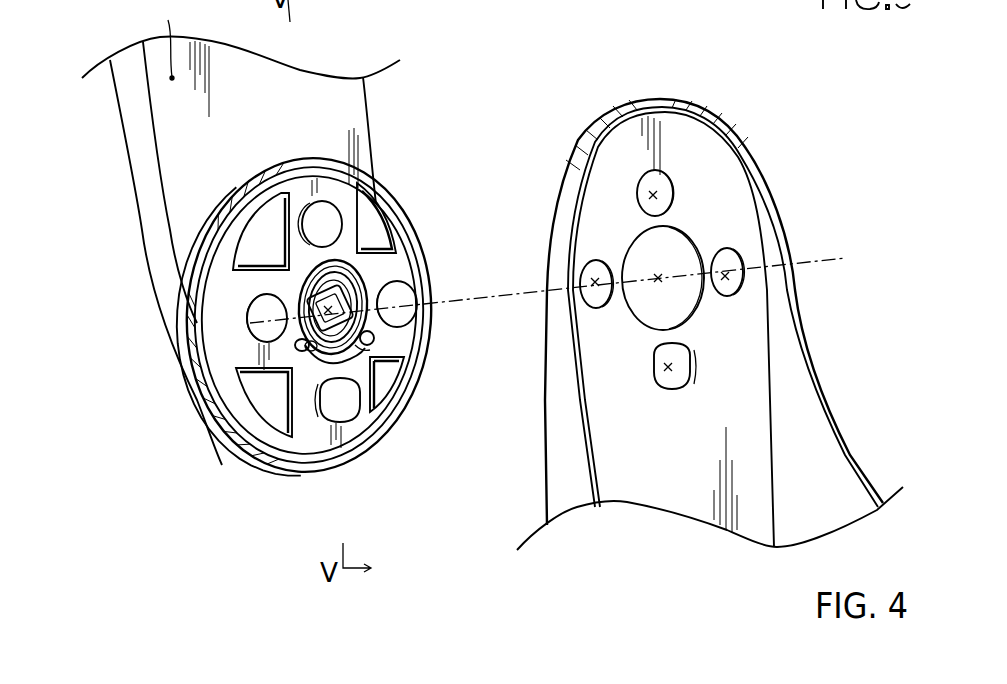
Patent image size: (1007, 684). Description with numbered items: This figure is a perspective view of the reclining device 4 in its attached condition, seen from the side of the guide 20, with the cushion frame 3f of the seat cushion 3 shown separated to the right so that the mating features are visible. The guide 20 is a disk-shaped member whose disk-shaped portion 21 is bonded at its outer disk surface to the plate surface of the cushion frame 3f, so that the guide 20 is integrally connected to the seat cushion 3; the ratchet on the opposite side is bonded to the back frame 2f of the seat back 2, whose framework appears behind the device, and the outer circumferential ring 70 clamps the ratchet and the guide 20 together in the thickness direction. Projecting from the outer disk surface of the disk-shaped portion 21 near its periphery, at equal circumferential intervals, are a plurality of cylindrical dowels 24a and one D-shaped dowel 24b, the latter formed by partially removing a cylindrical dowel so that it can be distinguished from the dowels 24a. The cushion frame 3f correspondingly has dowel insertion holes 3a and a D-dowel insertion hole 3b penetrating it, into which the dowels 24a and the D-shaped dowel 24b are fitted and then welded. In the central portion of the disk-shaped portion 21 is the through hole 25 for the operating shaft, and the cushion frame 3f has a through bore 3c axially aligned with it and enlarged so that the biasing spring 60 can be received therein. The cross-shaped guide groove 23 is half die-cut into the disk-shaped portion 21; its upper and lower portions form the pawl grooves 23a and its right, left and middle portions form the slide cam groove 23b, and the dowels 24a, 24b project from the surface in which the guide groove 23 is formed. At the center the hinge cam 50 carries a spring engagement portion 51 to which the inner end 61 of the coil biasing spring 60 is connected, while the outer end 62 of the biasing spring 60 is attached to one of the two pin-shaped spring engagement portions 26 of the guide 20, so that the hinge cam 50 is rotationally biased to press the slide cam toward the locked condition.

The seat back 2 is at (241, 250).
The back frame 2f is at (185, 40).
The seat cushion 3 is at (710, 324).
The cushion frame 3f is at (707, 170).
The dowel insertion holes 3a is at (597, 280).
The D-dowel insertion hole 3b is at (668, 367).
The through bore 3c is at (658, 278).
The reclining device 4 is at (360, 188).
The guide 20 is at (397, 387).
The disk-shaped portion 21 is at (309, 315).
The guide groove 23 is at (320, 310).
The pawl grooves 23a is at (290, 226).
The slide cam groove 23b is at (283, 289).
The dowels 24a is at (325, 223).
The D-shaped dowel 24b is at (347, 400).
The through hole 25 is at (348, 292).
The spring engagement portions 26 is at (300, 350).
The hinge cam 50 is at (305, 289).
The spring engagement portion 51 is at (335, 354).
The biasing spring 60 is at (351, 269).
The inner end 61 is at (362, 286).
The outer end 62 is at (374, 342).
The outer circumferential ring 70 is at (249, 194).